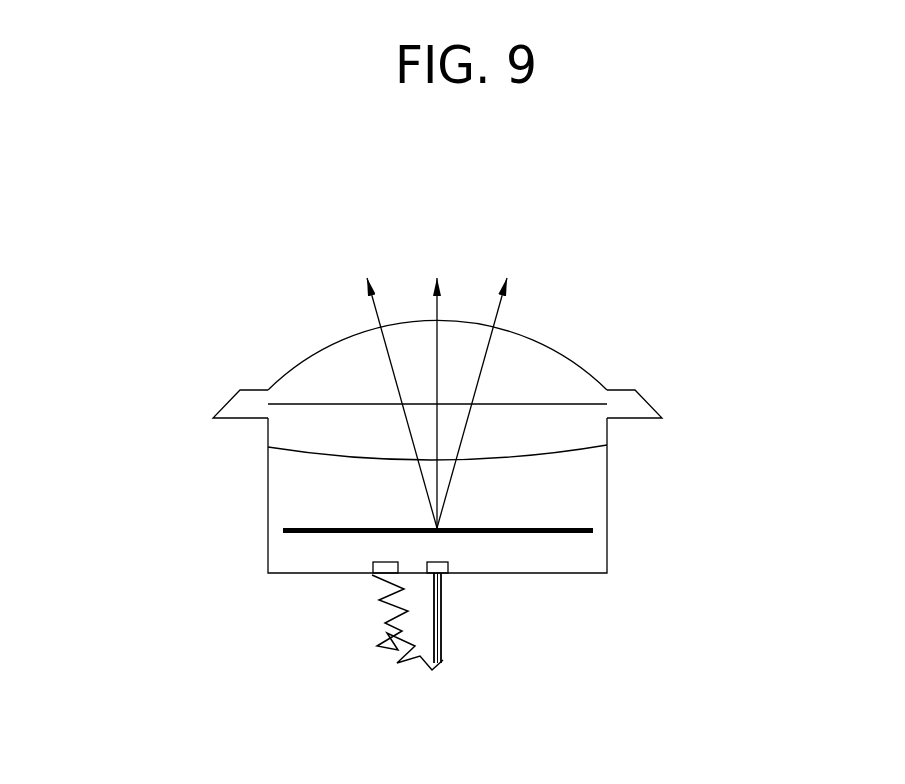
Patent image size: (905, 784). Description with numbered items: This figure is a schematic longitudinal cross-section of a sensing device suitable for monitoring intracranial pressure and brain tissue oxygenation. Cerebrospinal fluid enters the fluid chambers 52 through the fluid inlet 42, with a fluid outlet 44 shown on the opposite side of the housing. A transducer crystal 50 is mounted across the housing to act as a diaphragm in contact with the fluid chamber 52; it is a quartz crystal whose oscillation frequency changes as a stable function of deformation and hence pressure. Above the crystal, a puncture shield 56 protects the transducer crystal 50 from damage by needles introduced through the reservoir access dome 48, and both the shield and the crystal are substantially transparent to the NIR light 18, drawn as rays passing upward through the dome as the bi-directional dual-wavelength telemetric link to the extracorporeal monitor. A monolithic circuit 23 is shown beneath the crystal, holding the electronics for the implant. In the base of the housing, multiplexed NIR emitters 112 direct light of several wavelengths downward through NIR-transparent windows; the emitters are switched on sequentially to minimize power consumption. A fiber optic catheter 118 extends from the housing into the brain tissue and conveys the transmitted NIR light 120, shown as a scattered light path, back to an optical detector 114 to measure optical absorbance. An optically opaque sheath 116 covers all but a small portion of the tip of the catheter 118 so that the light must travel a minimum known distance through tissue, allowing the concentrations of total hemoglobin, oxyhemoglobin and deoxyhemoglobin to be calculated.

The NIR light 18 is at (456, 300).
The monolithic circuit 23 is at (566, 515).
The fluid inlet 42 is at (208, 404).
The fluid outlet 44 is at (663, 404).
The reservoir access dome 48 is at (521, 361).
The transducer crystal 50 is at (551, 460).
The fluid chambers 52 is at (323, 378).
The puncture shield 56 is at (366, 388).
The NIR emitters 112 is at (368, 578).
The optical detector 114 is at (456, 578).
The optically opaque sheath 116 is at (449, 632).
The fiber optic catheter 118 is at (443, 675).
The transmitted NIR light 120 is at (386, 672).